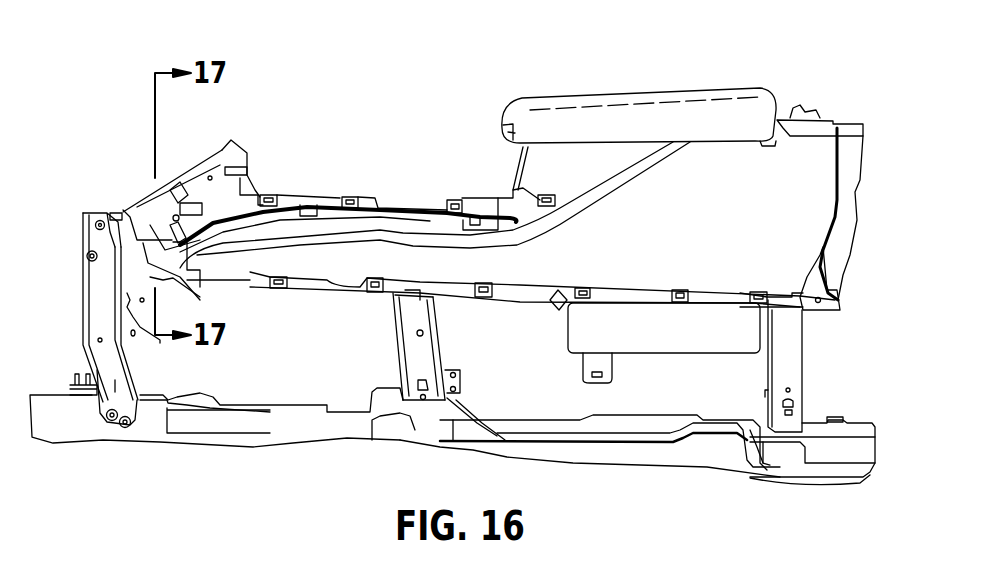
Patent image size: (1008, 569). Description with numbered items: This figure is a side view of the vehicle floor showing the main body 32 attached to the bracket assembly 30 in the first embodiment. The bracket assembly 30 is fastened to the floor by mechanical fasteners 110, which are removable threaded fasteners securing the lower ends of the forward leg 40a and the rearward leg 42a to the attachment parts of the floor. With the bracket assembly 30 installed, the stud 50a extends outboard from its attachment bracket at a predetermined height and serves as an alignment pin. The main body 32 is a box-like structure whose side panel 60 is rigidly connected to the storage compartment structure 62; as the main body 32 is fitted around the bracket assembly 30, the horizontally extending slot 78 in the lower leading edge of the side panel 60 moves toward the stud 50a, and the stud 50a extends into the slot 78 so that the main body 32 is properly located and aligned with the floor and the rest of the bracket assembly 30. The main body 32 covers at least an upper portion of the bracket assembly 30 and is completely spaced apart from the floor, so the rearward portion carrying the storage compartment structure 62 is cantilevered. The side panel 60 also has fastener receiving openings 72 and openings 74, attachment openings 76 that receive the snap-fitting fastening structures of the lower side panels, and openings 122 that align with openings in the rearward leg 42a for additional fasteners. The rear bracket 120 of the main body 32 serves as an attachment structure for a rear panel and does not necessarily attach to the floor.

The bracket assembly 30 is at (76, 278).
The main body 32 is at (627, 82).
The forward leg 40a is at (115, 375).
The rearward leg 42a is at (423, 353).
The stud 50a is at (182, 296).
The side panel 60 is at (778, 172).
The storage compartment structure 62 is at (700, 325).
The openings 72 is at (222, 152).
The openings 74 is at (512, 192).
The attachment openings 76 is at (375, 280).
The slot 78 is at (150, 270).
The mechanical fasteners 110 is at (118, 424).
The rear bracket 120 is at (787, 362).
The openings 122 is at (412, 290).